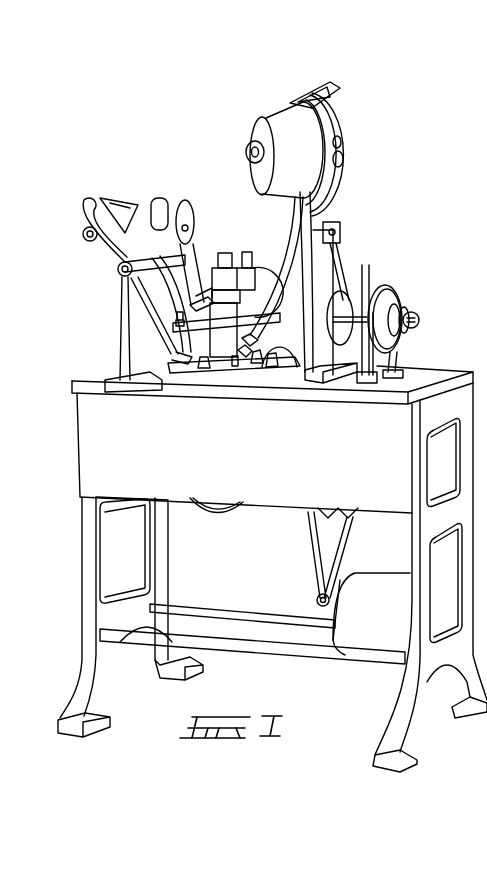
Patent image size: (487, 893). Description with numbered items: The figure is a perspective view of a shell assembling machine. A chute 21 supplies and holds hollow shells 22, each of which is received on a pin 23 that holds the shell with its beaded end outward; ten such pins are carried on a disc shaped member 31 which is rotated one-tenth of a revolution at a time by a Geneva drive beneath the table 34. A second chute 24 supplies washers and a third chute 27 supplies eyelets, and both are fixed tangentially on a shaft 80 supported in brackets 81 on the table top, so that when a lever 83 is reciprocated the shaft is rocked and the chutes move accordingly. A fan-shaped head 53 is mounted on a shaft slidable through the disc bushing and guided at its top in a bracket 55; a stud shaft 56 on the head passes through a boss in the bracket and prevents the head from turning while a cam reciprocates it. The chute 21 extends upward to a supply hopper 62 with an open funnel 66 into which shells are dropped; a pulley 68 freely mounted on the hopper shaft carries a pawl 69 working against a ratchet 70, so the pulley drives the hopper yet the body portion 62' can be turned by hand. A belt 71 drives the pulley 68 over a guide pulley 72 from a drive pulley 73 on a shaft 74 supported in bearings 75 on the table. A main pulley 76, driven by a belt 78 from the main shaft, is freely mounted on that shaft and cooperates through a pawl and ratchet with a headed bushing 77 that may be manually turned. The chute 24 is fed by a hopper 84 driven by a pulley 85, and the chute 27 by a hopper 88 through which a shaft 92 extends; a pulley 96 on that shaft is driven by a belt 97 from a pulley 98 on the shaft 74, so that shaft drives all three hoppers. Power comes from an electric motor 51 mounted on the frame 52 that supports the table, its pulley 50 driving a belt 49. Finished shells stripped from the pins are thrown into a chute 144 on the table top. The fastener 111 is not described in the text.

The chute 21 is at (271, 277).
The hollow shell 22 is at (263, 365).
The pin 23 is at (202, 368).
The chute 24 is at (160, 332).
The third chute 27 is at (160, 305).
The disc shaped member 31 is at (222, 375).
The table 34 is at (372, 402).
The belt 49 is at (312, 552).
The pulley 50 is at (316, 601).
The electric motor 51 is at (364, 588).
The frame 52 is at (280, 650).
The head 53 is at (252, 282).
The bracket 55 is at (250, 270).
The stud shaft 56 is at (243, 253).
The supply hopper 62 is at (286, 137).
The body portion of the hopper 62' is at (238, 130).
The open funnel 66 is at (330, 85).
The pulley 68 is at (343, 120).
The pawl 69 is at (341, 141).
The ratchet 70 is at (343, 158).
The belt 71 is at (340, 202).
The guide pulley 72 is at (342, 230).
The drive pulley 73 is at (342, 303).
The shaft 74 is at (331, 366).
The bearings 75 is at (362, 319).
The main pulley 76 is at (388, 290).
The headed bushing 77 is at (414, 313).
The belt 78 is at (397, 365).
The shaft 80 is at (118, 270).
The brackets 81 is at (128, 356).
The lever 83 is at (120, 283).
The hopper 84 is at (110, 200).
The pulley 85 is at (83, 234).
The hopper 88 is at (138, 212).
The shaft 92 is at (190, 227).
The pulley 96 is at (188, 214).
The belt 97 is at (198, 244).
The pulley 98 is at (205, 288).
The bolts 111 is at (180, 312).
The chute 144 is at (290, 368).